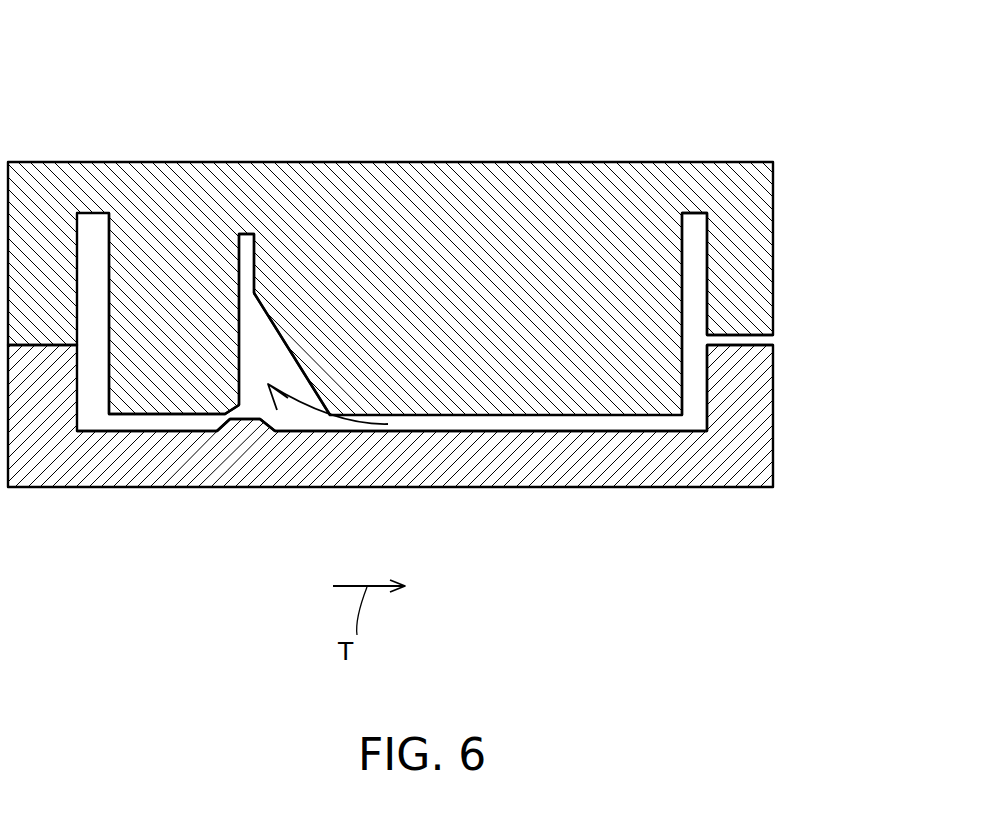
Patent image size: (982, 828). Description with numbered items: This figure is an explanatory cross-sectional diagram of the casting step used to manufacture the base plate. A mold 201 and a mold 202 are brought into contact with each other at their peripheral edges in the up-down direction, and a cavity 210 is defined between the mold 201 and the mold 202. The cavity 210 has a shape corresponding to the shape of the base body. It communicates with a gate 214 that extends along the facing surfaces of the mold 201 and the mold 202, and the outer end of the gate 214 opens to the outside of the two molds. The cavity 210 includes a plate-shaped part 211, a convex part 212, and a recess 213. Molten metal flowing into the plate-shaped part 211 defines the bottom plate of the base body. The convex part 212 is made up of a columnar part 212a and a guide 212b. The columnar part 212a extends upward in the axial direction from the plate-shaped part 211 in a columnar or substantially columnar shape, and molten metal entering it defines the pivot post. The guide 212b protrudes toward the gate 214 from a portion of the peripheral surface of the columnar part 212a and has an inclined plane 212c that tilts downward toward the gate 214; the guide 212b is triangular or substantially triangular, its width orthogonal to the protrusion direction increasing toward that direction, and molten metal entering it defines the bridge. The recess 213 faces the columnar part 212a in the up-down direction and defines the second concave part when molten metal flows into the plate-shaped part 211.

The mold 201 is at (408, 190).
The mold 202 is at (478, 467).
The cavity 210 is at (695, 418).
The plate-shaped part 211 is at (445, 425).
The convex part 212 is at (220, 212).
The columnar part 212a is at (245, 342).
The guide 212b is at (268, 342).
The inclined plane 212c is at (295, 352).
The recess 213 is at (243, 421).
The gate 214 is at (742, 333).